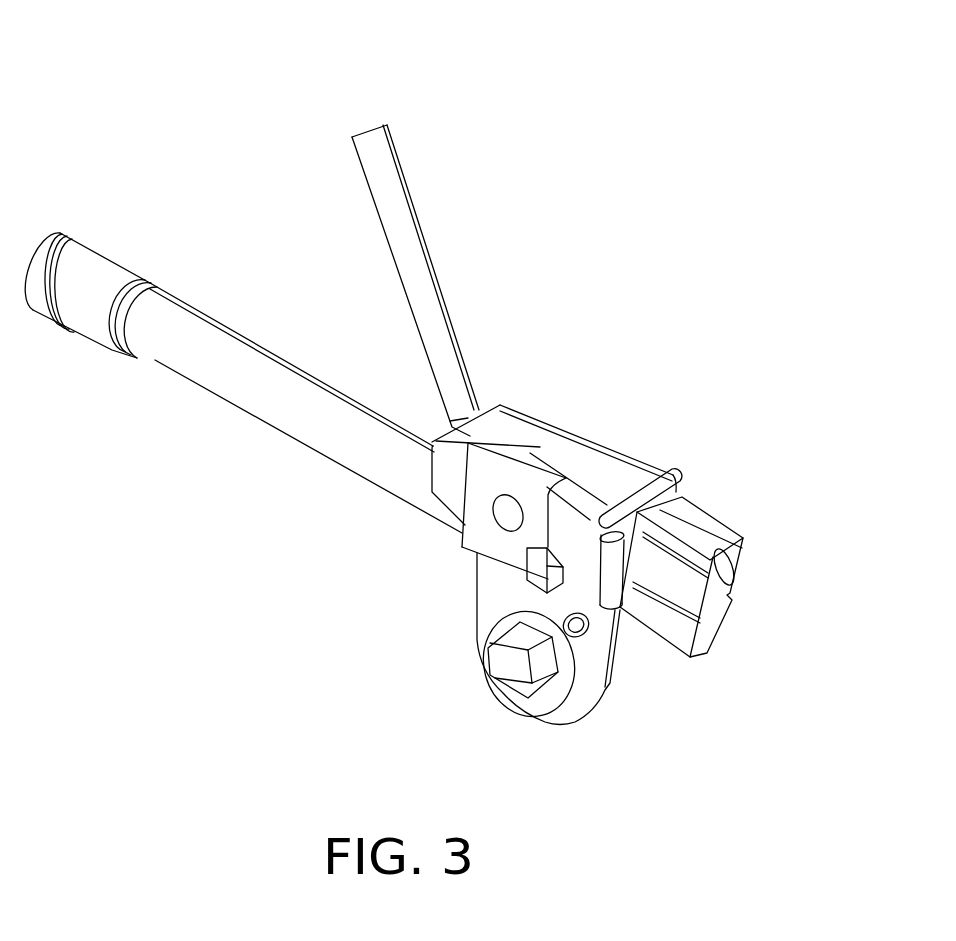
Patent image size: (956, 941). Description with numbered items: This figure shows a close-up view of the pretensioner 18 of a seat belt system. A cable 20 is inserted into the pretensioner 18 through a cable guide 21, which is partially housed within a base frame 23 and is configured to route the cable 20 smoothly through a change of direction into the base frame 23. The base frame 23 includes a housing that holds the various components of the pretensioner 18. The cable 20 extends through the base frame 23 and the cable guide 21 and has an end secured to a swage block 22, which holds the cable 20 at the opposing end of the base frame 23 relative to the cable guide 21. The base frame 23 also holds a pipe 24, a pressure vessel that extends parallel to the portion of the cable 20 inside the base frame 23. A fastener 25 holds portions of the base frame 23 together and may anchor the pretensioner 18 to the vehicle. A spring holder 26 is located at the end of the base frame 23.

The pretensioner 18 is at (143, 163).
The cable 20 is at (415, 238).
The cable guide 21 is at (505, 408).
The swage block 22 is at (710, 543).
The base frame 23 is at (473, 625).
The pipe 24 is at (148, 363).
The fastener 25 is at (534, 687).
The spring holder 26 is at (665, 490).